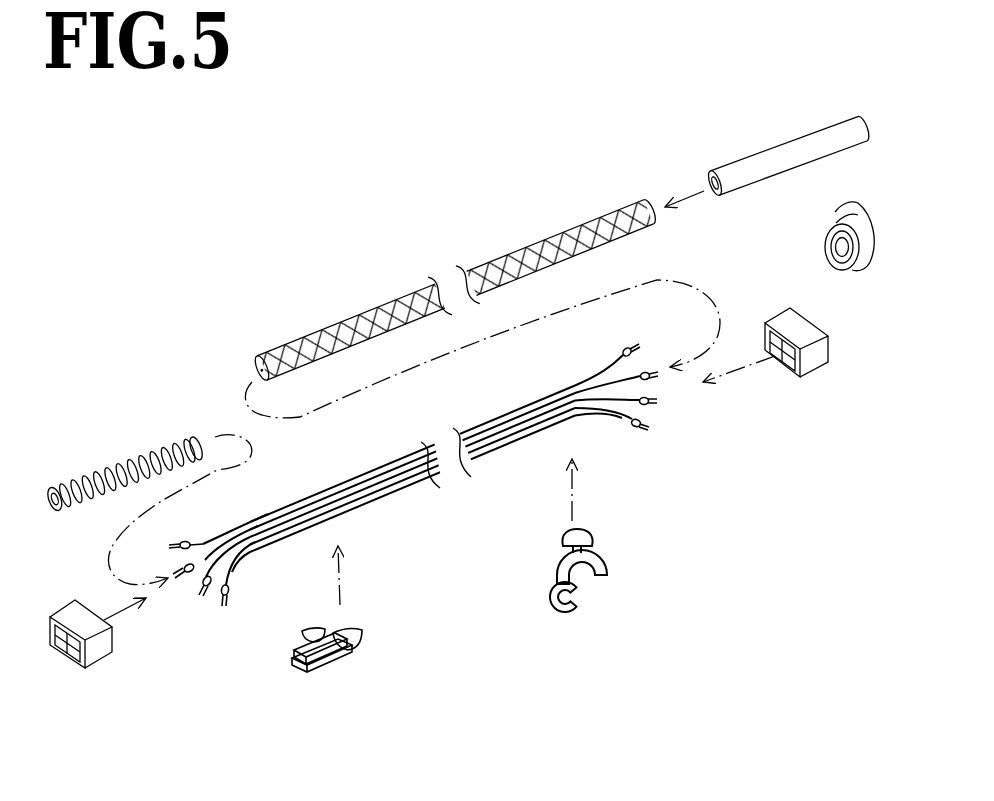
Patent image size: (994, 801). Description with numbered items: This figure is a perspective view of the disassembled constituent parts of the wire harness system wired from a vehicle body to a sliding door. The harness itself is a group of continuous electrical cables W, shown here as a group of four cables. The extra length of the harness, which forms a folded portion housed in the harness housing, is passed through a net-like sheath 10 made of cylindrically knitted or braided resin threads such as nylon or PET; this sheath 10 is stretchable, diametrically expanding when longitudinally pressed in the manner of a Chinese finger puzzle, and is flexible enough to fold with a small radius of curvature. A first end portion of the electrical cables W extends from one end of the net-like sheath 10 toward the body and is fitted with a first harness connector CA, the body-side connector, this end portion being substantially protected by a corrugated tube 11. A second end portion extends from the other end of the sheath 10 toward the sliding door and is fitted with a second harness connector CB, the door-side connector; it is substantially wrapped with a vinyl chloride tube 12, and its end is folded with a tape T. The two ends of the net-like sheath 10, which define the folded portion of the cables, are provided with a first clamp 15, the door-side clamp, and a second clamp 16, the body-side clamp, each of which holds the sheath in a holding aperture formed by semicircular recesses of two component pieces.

The net-like sheath 10 is at (537, 243).
The corrugated tube 11 is at (117, 457).
The vinyl chloride tube 12 is at (757, 162).
The first clamp 15 is at (602, 561).
The second clamp 16 is at (360, 636).
The electrical cables W is at (508, 452).
The first harness connector CA is at (103, 652).
The second harness connector CB is at (818, 362).
The tape T is at (862, 264).